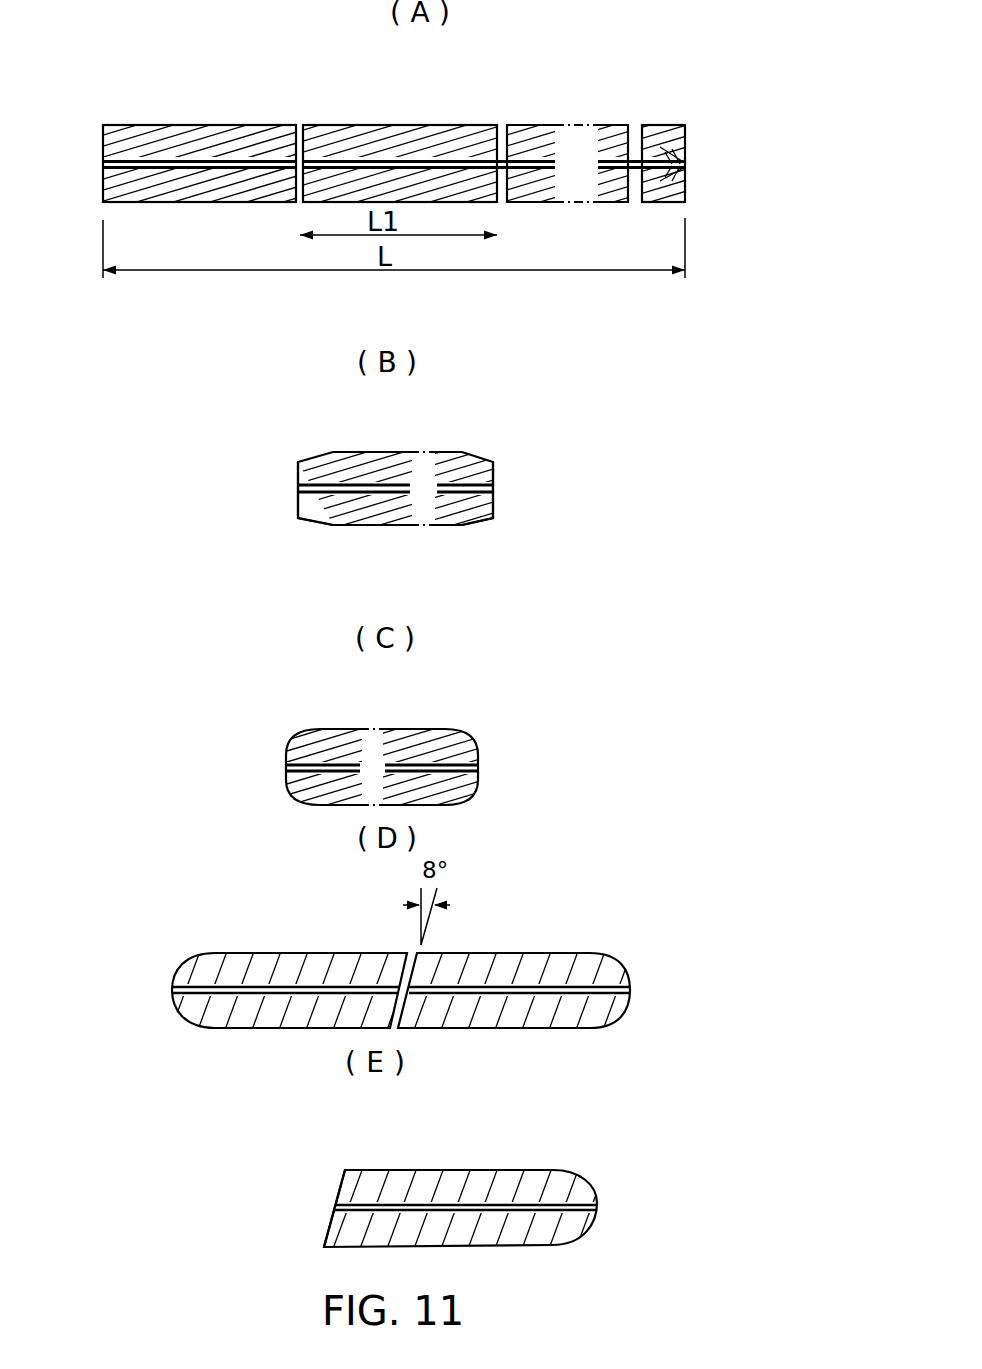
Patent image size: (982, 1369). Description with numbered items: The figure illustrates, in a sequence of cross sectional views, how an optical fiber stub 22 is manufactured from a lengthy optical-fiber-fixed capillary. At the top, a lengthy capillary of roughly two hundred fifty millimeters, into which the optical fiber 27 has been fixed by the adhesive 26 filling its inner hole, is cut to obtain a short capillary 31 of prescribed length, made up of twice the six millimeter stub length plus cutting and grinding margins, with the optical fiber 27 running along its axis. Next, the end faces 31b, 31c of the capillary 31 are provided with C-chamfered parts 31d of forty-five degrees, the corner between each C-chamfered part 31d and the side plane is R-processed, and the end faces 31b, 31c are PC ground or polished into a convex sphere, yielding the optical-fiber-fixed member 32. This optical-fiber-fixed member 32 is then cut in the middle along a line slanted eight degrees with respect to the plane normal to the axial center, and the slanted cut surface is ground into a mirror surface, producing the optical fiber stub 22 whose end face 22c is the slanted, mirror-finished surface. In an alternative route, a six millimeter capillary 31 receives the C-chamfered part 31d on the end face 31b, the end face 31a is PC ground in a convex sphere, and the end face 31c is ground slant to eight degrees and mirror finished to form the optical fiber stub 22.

The capillary 31 is at (403, 127).
The end face 31a is at (362, 494).
The end face 31b is at (300, 242).
The end face 31c is at (497, 242).
The C-chamfered part 31d is at (483, 525).
The optical fiber 27 is at (690, 163).
The adhesive 26 is at (688, 175).
The optical-fiber-fixed member 32 is at (396, 735).
The optical fiber stub 22 is at (375, 1165).
The end face 22c is at (331, 1222).